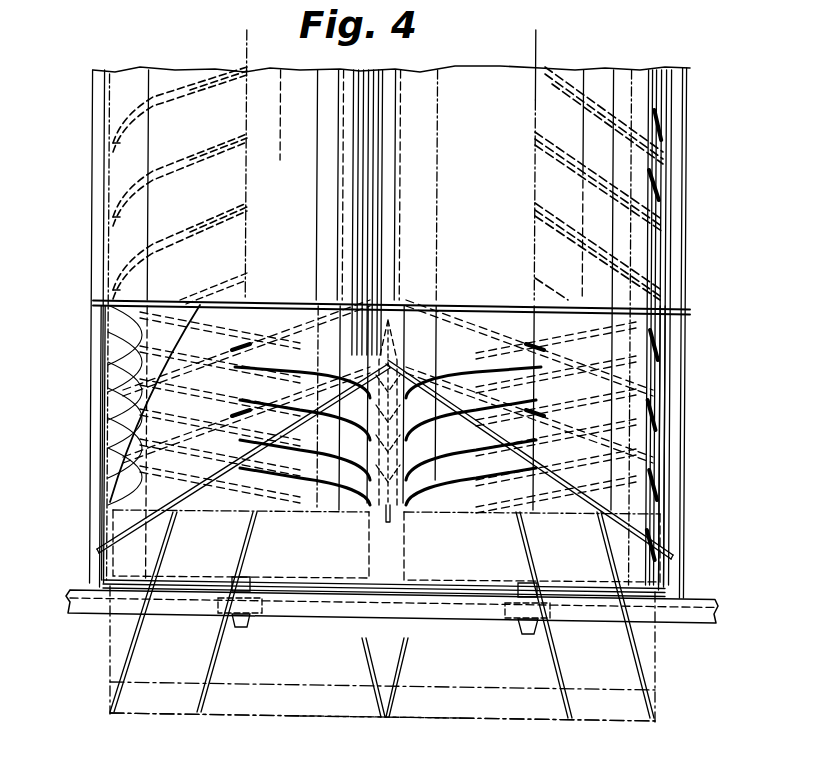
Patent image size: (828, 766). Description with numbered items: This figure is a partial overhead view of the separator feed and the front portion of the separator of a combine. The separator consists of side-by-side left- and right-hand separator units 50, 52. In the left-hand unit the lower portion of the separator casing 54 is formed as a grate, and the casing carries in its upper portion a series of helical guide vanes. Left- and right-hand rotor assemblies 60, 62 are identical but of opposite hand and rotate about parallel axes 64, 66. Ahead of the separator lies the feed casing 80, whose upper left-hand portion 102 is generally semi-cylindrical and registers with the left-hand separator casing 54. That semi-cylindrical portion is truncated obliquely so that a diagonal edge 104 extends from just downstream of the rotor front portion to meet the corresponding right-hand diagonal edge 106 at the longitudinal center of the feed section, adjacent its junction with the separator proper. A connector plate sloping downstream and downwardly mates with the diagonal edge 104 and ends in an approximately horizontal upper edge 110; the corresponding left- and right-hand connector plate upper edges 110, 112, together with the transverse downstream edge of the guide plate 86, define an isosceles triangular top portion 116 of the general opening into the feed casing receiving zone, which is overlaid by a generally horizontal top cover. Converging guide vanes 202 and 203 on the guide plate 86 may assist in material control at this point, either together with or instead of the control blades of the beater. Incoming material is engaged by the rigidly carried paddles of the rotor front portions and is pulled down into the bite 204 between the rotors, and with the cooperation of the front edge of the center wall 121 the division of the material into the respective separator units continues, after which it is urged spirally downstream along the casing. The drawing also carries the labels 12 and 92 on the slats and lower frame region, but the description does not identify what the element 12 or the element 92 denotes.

The slat 12 is at (578, 430).
The left-hand separator unit 50 is at (708, 126).
The right-hand separator unit 52 is at (70, 157).
The separator casing 54 is at (724, 252).
The left-hand rotor assembly 60 is at (638, 84).
The right-hand rotor assembly 62 is at (150, 89).
The rotor axis 64 is at (536, 37).
The rotor axis 66 is at (247, 41).
The feed casing 80 is at (708, 450).
The guide plate 86 is at (170, 718).
The upper left-hand portion of the feed casing 102 is at (393, 676).
The diagonal edge 104 is at (405, 366).
The right-hand diagonal edge 106 is at (357, 352).
The connector plate upper edge 110 is at (630, 530).
The connector plate upper edge 112 is at (140, 520).
The triangular top portion 116 is at (333, 548).
The converging guide vane 202 is at (152, 620).
The converging guide vane 203 is at (404, 660).
The lower rail 92 is at (209, 739).
The center wall 121 is at (380, 741).
The bite 204 is at (557, 742).